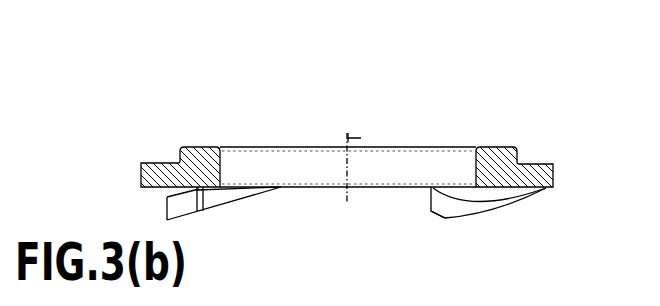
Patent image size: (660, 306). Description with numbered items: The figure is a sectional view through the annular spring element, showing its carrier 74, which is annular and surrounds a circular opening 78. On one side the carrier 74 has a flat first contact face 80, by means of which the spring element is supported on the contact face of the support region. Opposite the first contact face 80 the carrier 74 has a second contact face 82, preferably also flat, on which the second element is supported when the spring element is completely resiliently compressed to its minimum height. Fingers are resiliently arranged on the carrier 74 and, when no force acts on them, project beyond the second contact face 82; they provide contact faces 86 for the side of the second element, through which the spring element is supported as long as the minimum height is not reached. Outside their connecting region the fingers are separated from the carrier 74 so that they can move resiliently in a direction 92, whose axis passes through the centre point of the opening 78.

The carrier 74 is at (193, 163).
The opening 78 is at (418, 170).
The first contact face 80 is at (494, 147).
The second contact face 82 is at (548, 190).
The contact faces 86 is at (447, 218).
The direction 92 is at (361, 138).